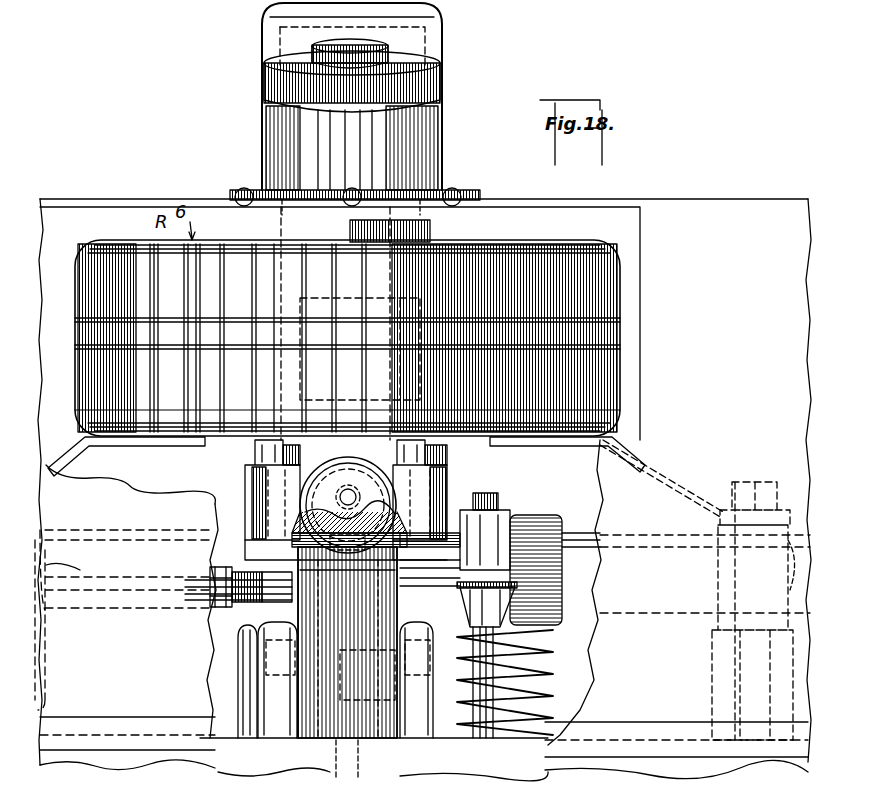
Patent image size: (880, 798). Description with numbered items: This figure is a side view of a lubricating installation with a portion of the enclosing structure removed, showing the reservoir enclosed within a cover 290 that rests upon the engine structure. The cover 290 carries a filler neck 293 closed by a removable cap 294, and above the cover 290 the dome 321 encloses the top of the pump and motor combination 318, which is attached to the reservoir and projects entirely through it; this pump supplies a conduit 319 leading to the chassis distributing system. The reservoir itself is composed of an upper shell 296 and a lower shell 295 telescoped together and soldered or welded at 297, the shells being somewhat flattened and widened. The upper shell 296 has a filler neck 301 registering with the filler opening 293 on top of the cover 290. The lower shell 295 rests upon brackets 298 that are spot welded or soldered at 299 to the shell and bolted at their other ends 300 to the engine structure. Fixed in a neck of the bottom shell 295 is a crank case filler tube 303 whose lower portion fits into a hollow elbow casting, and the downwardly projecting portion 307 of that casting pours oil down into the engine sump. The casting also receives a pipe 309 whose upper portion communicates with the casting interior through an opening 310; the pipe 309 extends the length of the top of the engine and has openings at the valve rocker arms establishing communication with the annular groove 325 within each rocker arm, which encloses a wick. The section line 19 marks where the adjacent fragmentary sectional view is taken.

The cover 290 is at (719, 210).
The dome 321 is at (442, 35).
The removable cap 294 is at (440, 88).
The filler neck 293 is at (432, 142).
The filler neck 301 is at (430, 230).
The upper shell 296 is at (610, 284).
The soldered or welded joint 297 is at (620, 341).
The lower shell 295 is at (612, 405).
The crank case filler tube 303 is at (402, 311).
The spot welded or soldered connection 299 is at (190, 447).
The section line 19— 19 is at (332, 768).
The annular groove 325 is at (298, 527).
The opening 310 is at (348, 550).
The downwardly projecting portion 307 is at (305, 700).
The pump and motor combination 318 is at (262, 594).
The conduit 319 is at (133, 576).
The pipe 309 is at (576, 535).
The bolted ends of brackets 300 is at (720, 525).
The brackets 298 is at (630, 468).